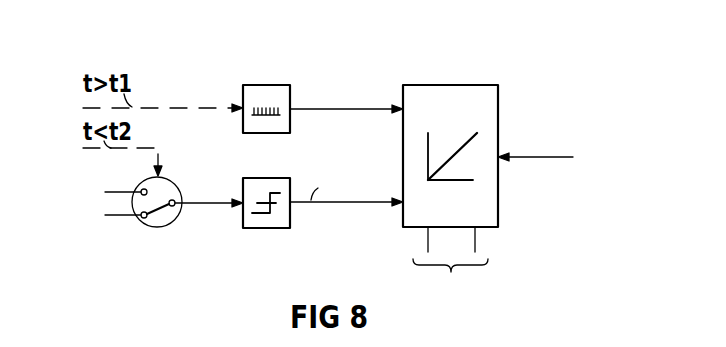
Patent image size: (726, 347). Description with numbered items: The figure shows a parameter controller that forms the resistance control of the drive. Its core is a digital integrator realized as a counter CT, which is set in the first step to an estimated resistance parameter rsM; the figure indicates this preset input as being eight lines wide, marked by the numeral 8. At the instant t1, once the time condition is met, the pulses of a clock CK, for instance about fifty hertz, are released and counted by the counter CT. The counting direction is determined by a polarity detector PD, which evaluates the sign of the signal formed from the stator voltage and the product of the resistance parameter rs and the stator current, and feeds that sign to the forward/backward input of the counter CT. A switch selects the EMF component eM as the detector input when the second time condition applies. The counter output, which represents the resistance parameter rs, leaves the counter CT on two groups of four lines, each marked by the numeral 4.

The bus width of rSM input (8 lines) 8 is at (548, 152).
The bus width of counter outputs rs (4 lines) 4 is at (481, 237).
The clock CK is at (264, 88).
The polarity detector PD is at (262, 229).
The counter CT is at (441, 88).
The resistance parameter rs is at (450, 284).
The EMF vector component eM is at (131, 216).